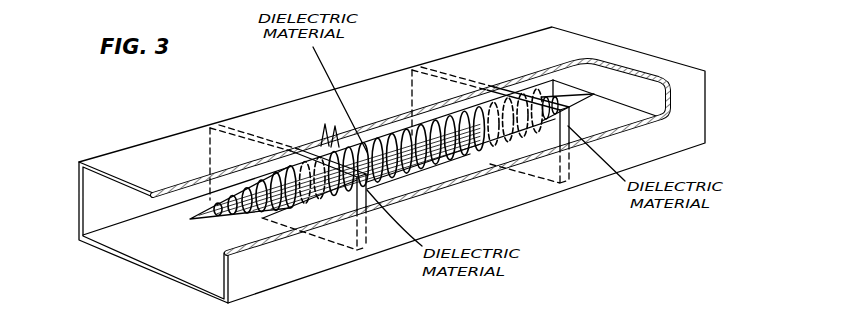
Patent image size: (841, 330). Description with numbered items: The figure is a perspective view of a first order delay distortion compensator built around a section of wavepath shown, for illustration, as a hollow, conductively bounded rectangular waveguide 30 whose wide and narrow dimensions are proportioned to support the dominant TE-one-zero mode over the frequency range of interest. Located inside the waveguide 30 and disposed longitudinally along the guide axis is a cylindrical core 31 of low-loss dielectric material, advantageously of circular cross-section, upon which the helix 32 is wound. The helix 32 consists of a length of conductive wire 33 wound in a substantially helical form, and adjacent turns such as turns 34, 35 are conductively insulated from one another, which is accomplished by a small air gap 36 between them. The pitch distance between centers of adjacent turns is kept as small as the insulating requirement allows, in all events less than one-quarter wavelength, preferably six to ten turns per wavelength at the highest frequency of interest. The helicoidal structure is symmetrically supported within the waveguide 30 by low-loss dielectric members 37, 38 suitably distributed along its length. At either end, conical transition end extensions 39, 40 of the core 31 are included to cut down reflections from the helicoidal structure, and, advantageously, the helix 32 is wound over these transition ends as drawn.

The rectangular waveguide 30 is at (280, 274).
The cylindrical core 31 is at (398, 134).
The helix 32 is at (378, 137).
The conductive wire 33 is at (338, 138).
The turn of the helix 34 is at (390, 190).
The turn of the helix 35 is at (455, 170).
The air gap 36 is at (438, 188).
The dielectric member 37 is at (366, 203).
The dielectric member 38 is at (565, 130).
The conical transition end extension 39 is at (212, 223).
The conical transition end extension 40 is at (578, 95).